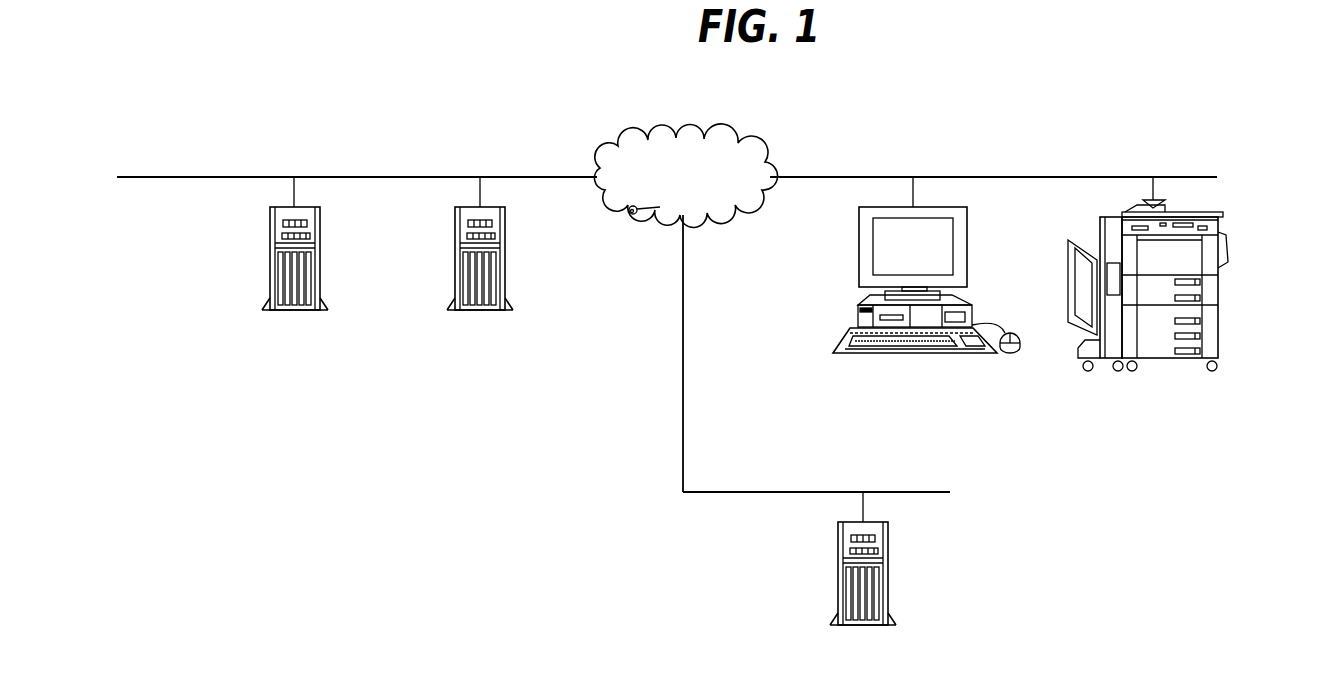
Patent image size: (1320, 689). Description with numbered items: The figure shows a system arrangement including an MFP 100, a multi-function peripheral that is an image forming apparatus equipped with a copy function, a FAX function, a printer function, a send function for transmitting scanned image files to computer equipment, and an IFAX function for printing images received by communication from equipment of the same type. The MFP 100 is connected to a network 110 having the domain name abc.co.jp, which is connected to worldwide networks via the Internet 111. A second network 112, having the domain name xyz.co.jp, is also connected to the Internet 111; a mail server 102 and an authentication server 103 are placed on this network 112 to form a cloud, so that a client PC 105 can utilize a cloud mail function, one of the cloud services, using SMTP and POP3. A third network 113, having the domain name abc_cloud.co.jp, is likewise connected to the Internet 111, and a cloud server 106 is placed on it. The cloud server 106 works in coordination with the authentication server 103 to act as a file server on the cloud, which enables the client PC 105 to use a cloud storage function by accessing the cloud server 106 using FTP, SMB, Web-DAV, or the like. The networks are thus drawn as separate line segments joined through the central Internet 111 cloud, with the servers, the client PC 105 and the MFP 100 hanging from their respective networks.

The MFP 100 is at (1220, 320).
The mail server 102 is at (505, 262).
The authentication server 103 is at (270, 255).
The client PC 105 is at (858, 252).
The cloud server 106 is at (890, 580).
The network 110 is at (1188, 175).
The Internet 111 is at (742, 135).
The network 112 is at (400, 176).
The network 113 is at (915, 491).